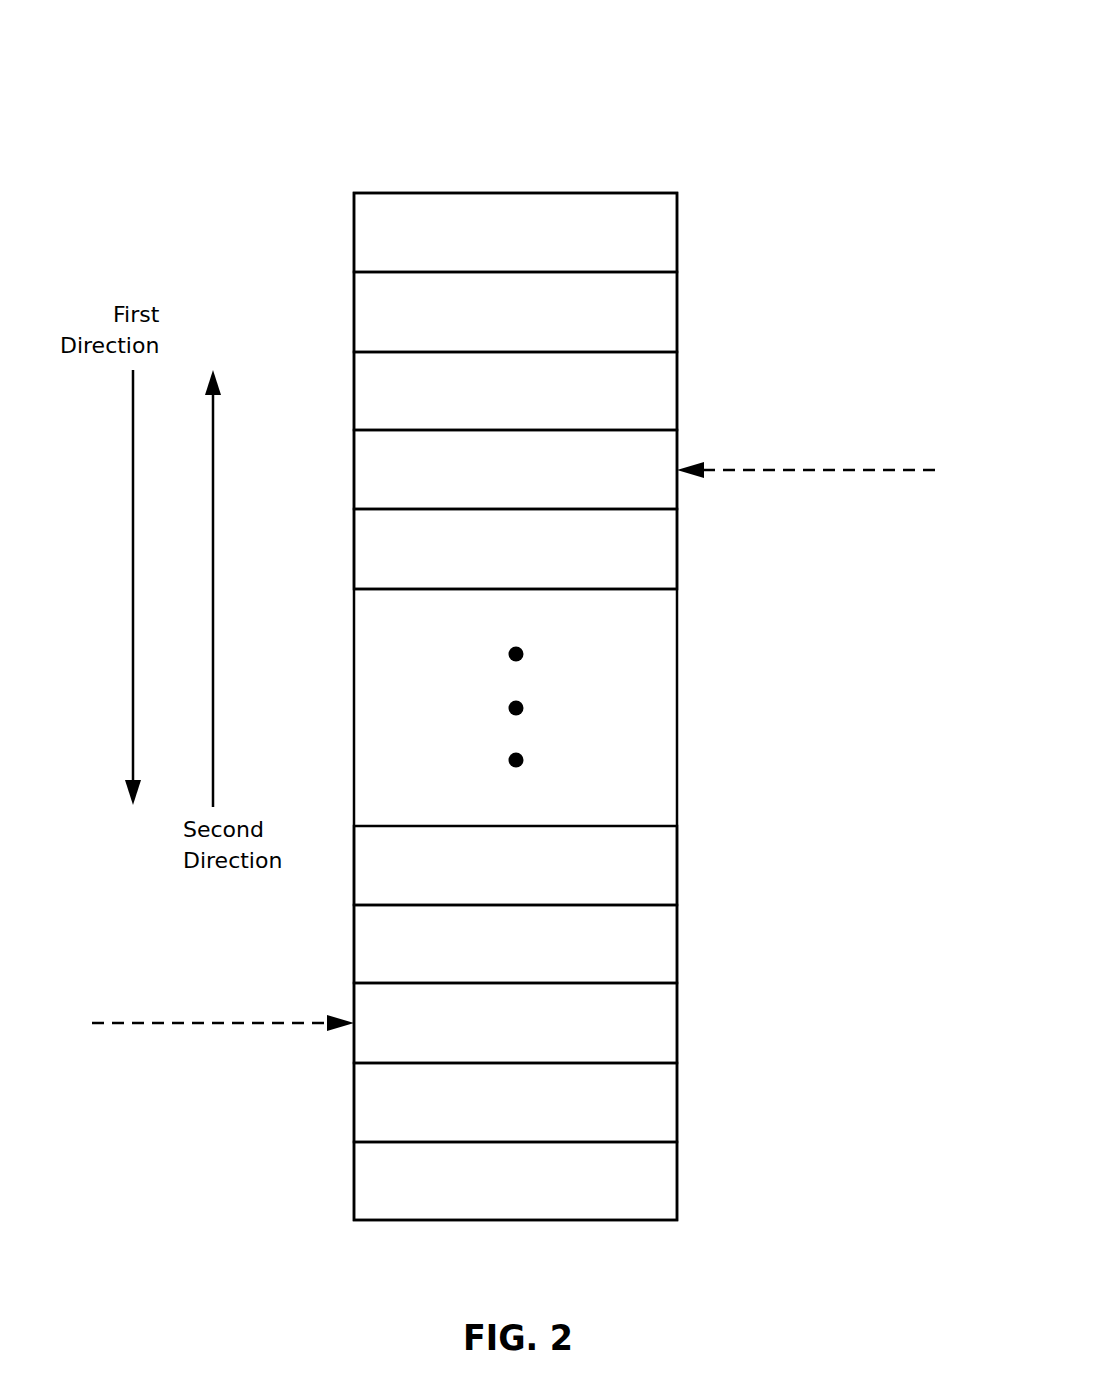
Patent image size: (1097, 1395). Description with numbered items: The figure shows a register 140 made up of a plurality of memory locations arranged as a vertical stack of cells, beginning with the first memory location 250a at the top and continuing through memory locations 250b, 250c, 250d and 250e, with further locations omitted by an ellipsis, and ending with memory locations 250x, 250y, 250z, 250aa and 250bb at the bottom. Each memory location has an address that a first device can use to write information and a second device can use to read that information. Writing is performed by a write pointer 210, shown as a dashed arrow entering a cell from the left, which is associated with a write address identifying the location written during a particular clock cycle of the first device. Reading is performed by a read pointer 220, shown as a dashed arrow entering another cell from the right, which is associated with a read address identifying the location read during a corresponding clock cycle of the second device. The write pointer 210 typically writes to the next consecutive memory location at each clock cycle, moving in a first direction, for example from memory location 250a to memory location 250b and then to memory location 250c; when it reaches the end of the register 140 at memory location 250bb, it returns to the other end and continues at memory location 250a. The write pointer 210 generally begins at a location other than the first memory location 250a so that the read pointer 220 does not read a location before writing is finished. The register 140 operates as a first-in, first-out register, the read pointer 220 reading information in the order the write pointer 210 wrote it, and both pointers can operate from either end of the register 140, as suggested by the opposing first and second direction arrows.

The register 140 is at (692, 83).
The first memory location 250a is at (677, 213).
The memory location 250b is at (677, 292).
The memory location 250c is at (677, 372).
The memory location 250d is at (677, 450).
The memory location 250e is at (677, 529).
The memory location 250x is at (677, 846).
The memory location 250y is at (677, 925).
The memory location 250z is at (677, 1003).
The memory location 250aa is at (677, 1083).
The memory location 250bb is at (677, 1162).
The write pointer 210 is at (180, 1023).
The read pointer 220 is at (855, 471).